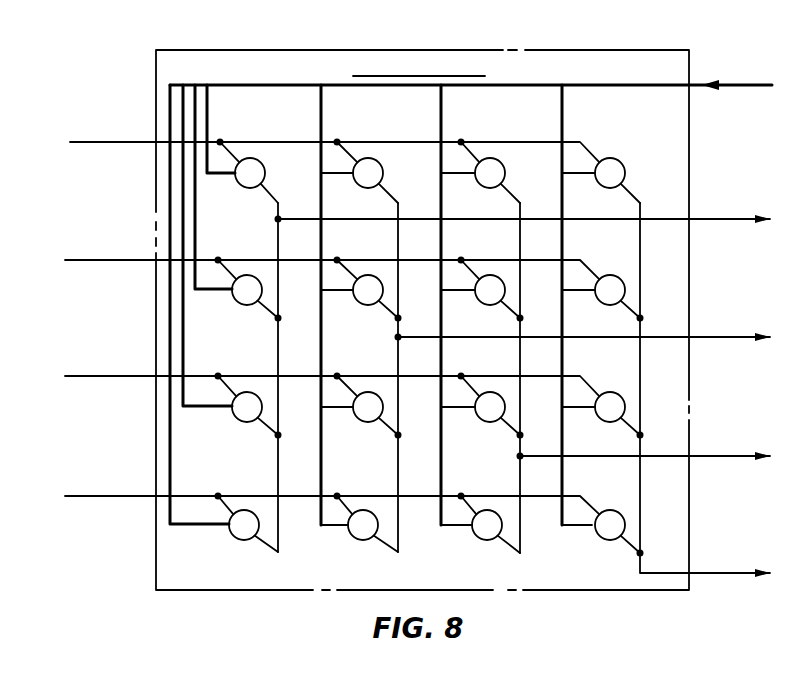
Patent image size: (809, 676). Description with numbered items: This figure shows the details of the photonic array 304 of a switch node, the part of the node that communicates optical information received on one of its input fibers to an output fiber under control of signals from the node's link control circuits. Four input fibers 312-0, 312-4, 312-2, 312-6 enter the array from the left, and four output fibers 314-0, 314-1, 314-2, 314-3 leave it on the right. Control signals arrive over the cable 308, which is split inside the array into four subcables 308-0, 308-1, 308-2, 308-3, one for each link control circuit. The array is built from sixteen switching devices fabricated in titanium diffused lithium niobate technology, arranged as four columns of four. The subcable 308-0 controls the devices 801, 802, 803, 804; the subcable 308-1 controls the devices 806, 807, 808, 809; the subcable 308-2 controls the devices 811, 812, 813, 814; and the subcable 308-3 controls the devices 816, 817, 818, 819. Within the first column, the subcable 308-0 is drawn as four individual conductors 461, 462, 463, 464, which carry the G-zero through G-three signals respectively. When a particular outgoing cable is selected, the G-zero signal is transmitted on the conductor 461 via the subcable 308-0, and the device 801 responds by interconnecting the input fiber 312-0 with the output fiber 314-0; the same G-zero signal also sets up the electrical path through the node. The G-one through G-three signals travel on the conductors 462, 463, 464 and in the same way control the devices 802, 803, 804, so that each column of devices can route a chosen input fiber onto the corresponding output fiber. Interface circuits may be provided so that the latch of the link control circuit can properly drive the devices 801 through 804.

The photonic array 304 is at (546, 51).
The cable 308 is at (732, 85).
The subcable 308-0 is at (233, 323).
The subcable 308-1 is at (327, 114).
The subcable 308-2 is at (447, 114).
The subcable 308-3 is at (568, 114).
The input fiber 312-0 is at (105, 140).
The input fiber 312-4 is at (105, 257).
The input fiber 312-2 is at (105, 366).
The input fiber 312-6 is at (105, 486).
The output fiber 314-0 is at (731, 214).
The output fiber 314-1 is at (731, 332).
The output fiber 314-2 is at (719, 453).
The output fiber 314-3 is at (719, 569).
The conductor 461 is at (219, 177).
The conductor 462 is at (212, 293).
The conductor 463 is at (205, 410).
The conductor 464 is at (197, 528).
The switching device 801 is at (250, 187).
The switching device 802 is at (247, 304).
The switching device 803 is at (246, 421).
The switching device 804 is at (242, 539).
The switching device 806 is at (362, 186).
The switching device 807 is at (362, 303).
The switching device 808 is at (360, 420).
The switching device 809 is at (358, 538).
The switching device 811 is at (484, 186).
The switching device 812 is at (484, 303).
The switching device 813 is at (482, 420).
The switching device 814 is at (479, 539).
The switching device 816 is at (603, 186).
The switching device 817 is at (603, 303).
The switching device 818 is at (602, 420).
The switching device 819 is at (600, 539).